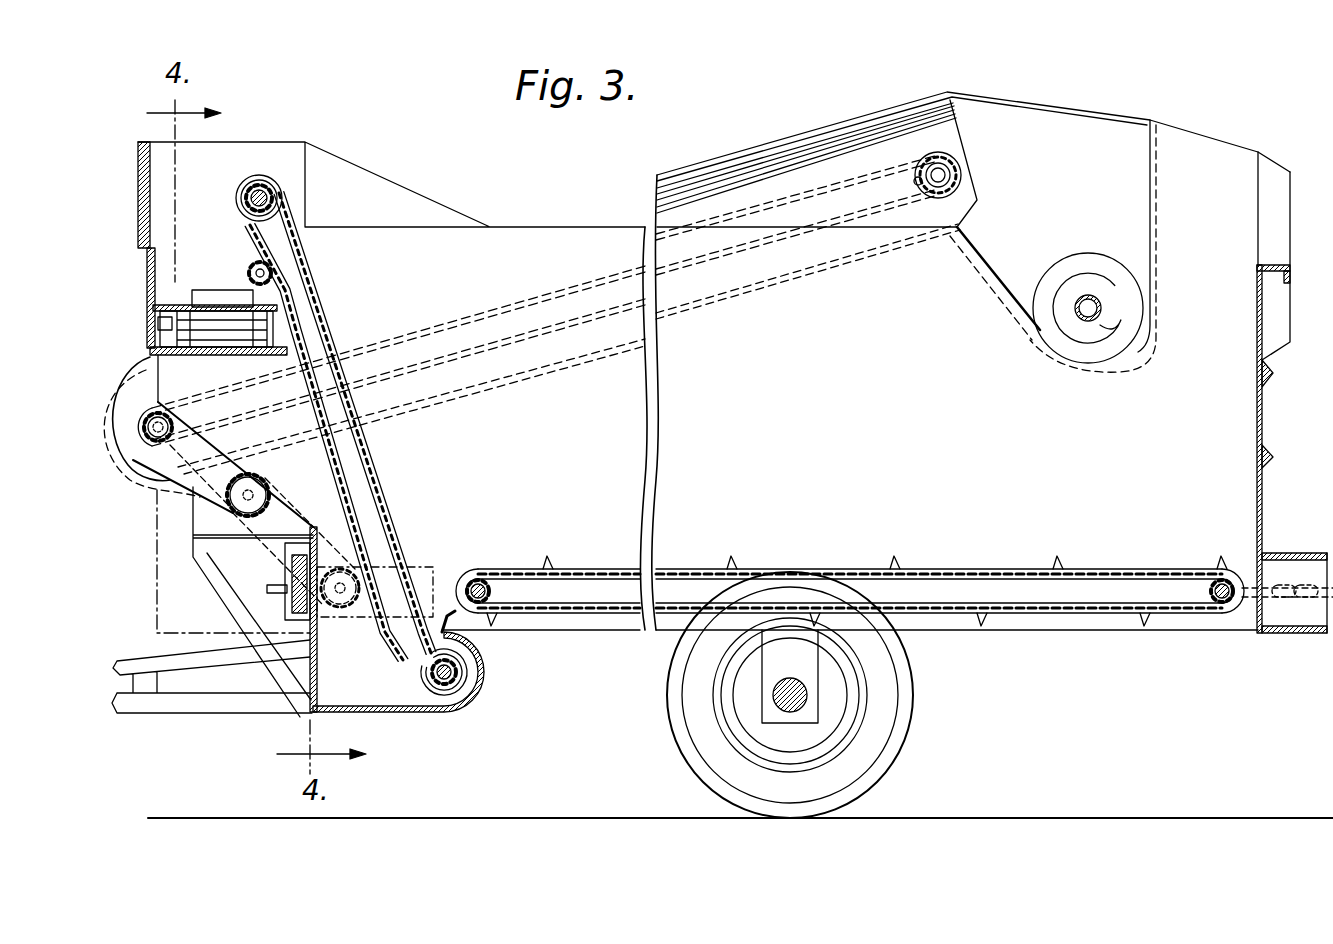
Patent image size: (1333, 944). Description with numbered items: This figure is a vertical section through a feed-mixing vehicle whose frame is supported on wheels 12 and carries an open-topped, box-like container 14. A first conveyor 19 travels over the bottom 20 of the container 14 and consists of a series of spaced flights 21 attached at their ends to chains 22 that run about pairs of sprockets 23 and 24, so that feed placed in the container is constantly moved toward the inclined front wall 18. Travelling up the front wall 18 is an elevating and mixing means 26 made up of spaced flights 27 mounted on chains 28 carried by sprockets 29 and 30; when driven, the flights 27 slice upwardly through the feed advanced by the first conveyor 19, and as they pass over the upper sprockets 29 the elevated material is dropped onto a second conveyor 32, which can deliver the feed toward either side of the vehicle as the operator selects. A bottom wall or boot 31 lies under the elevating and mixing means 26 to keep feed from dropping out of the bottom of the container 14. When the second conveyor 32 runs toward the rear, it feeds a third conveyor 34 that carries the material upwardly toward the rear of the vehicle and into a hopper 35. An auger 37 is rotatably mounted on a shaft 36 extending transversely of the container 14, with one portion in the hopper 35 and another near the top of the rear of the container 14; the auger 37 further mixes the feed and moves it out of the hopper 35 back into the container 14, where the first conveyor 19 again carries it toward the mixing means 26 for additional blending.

The wheels 12 is at (912, 724).
The container 14 is at (803, 401).
The front wall 18 is at (363, 427).
The first conveyor 19 is at (850, 590).
The bottom 20 is at (840, 568).
The flights 21 is at (730, 563).
The chains 22 is at (1145, 572).
The sprockets 23 is at (1225, 612).
The sprockets 24 is at (498, 590).
The elevating and mixing means 26 is at (392, 452).
The flights 27 is at (383, 509).
The chains 28 is at (323, 320).
The sprockets 29 is at (258, 186).
The sprockets 30 is at (457, 674).
The bottom wall or boot 31 is at (483, 687).
The second conveyor 32 is at (217, 272).
The third conveyor 34 is at (808, 197).
The hopper 35 is at (1142, 179).
The shaft 36 is at (1105, 302).
The auger 37 is at (1108, 259).